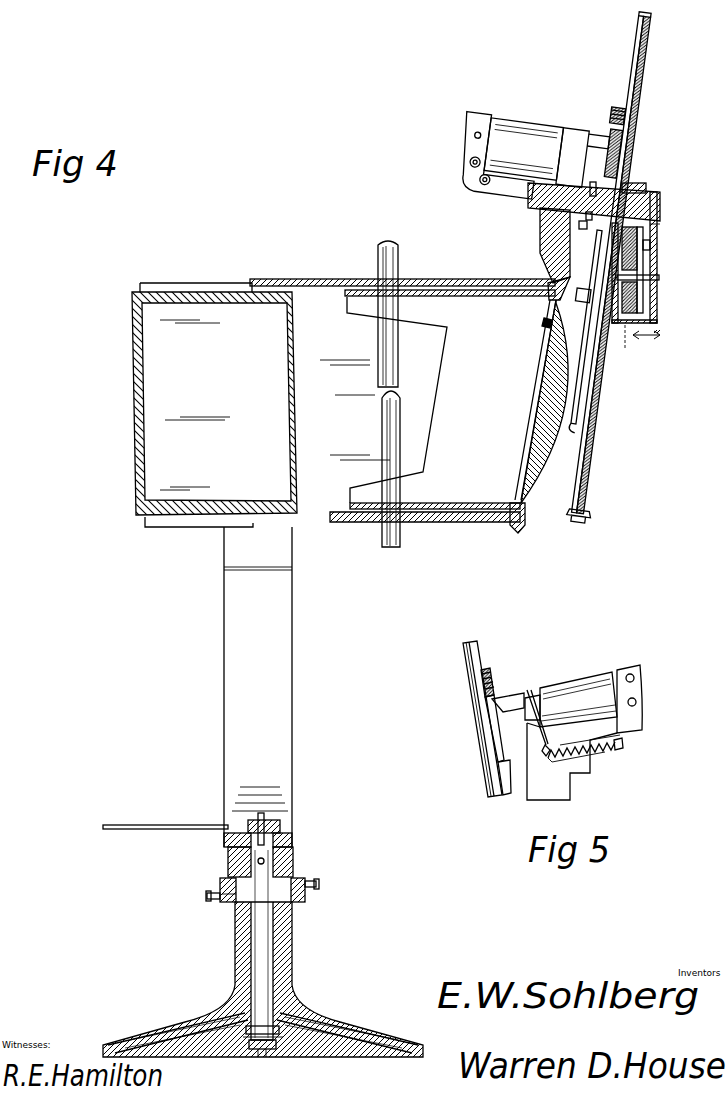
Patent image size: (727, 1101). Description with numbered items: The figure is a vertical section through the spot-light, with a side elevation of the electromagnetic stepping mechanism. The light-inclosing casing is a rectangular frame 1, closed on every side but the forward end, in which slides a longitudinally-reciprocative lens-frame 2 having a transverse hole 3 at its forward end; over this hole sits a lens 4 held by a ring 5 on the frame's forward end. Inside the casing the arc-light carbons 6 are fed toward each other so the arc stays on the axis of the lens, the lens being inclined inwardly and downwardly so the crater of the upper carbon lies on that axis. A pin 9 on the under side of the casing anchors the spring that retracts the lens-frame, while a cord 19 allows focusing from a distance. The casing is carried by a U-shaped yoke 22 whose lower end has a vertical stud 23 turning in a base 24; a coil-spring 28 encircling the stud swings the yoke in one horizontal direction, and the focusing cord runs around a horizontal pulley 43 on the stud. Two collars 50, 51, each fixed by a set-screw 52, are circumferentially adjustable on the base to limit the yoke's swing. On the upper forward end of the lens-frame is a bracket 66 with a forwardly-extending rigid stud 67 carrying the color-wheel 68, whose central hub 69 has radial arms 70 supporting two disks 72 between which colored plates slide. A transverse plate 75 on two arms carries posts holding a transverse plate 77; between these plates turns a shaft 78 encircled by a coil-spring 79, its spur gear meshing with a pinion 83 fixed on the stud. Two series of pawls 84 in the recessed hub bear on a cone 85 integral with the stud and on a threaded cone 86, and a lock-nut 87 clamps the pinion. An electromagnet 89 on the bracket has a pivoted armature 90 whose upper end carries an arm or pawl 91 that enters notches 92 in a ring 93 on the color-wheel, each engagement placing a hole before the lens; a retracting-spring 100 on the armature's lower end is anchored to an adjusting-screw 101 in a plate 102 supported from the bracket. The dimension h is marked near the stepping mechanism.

In FIG. 4, the rectangular frame 1 is at (343, 403).
In FIG. 4, the lens-frame 2 is at (442, 406).
In FIG. 4, the transverse hole 3 is at (537, 372).
In FIG. 4, the lens 4 is at (548, 394).
In FIG. 4, the ring 5 is at (542, 324).
In FIG. 4, the carbons 6 is at (378, 255).
In FIG. 4, the pin 9 is at (650, 180).
In FIG. 4, the cord 19 is at (160, 825).
In FIG. 4, the U-shaped yoke 22 is at (258, 687).
In FIG. 4, the vertical stud 23 is at (290, 868).
In FIG. 4, the base 24 is at (293, 948).
In FIG. 4, the coil-spring 28 is at (246, 1048).
In FIG. 4, the horizontal pulley 43 is at (282, 822).
In FIG. 4, the collar 50 is at (220, 884).
In FIG. 4, the collar 51 is at (228, 902).
In FIG. 4, the set-screw 52 is at (324, 884).
In FIG. 4, the bracket 66 is at (540, 238).
In FIG. 5, the bracket 66 is at (643, 715).
In FIG. 4, the rigid stud 67 is at (530, 200).
In FIG. 4, the color-wheel 68 is at (626, 271).
In FIG. 5, the color-wheel 68 is at (471, 719).
In FIG. 4, the central hub 69 is at (589, 229).
In FIG. 4, the radial arms 70 is at (575, 66).
In FIG. 5, the radial arms 70 is at (470, 676).
In FIG. 4, the disks 72 is at (632, 58).
In FIG. 4, the transverse plate 75 is at (557, 300).
In FIG. 4, the transverse plate 77 is at (645, 292).
In FIG. 4, the shaft 78 is at (660, 280).
In FIG. 4, the coil-spring 79 is at (552, 303).
In FIG. 4, the pinion 83 is at (657, 195).
In FIG. 4, the pawls 84 is at (594, 190).
In FIG. 4, the cone 85 is at (545, 252).
In FIG. 4, the cone 86 is at (650, 230).
In FIG. 4, the lock-nut 87 is at (660, 222).
In FIG. 4, the electromagnet 89 is at (474, 134).
In FIG. 5, the electromagnet 89 is at (585, 685).
In FIG. 5, the pivoted armature 90 is at (537, 688).
In FIG. 4, the arm or pawl 91 is at (584, 147).
In FIG. 5, the arm or pawl 91 is at (511, 694).
In FIG. 4, the notches 92 is at (636, 155).
In FIG. 5, the notches 92 is at (490, 768).
In FIG. 4, the ring 93 is at (640, 117).
In FIG. 5, the ring 93 is at (488, 668).
In FIG. 5, the retracting-spring 100 is at (600, 754).
In FIG. 5, the adjusting-screw 101 is at (623, 744).
In FIG. 5, the plate 102 is at (620, 736).
In FIG. 4, the distance h is at (639, 347).